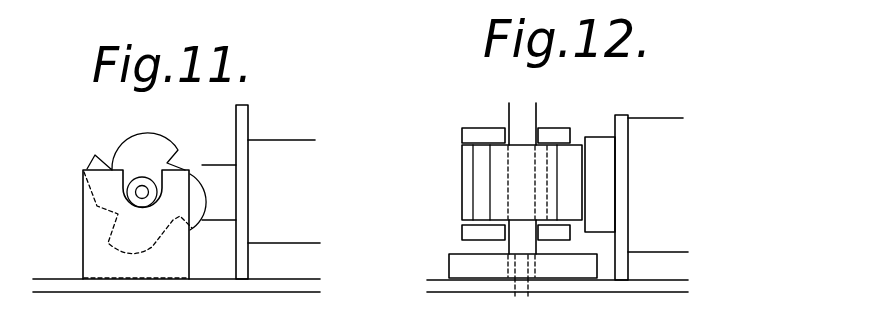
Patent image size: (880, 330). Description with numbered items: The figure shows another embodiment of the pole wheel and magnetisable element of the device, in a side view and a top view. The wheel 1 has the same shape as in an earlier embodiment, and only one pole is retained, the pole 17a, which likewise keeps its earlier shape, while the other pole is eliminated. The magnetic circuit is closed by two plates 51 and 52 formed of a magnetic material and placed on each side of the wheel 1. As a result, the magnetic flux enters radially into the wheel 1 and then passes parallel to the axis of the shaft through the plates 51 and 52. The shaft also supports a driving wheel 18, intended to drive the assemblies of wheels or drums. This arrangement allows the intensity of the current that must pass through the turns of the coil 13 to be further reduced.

In FIG. 11, the wheel 1 is at (160, 146).
In FIG. 12, the wheel 1 is at (460, 175).
In FIG. 11, the coil 13 is at (290, 158).
In FIG. 12, the coil 13 is at (654, 137).
In FIG. 11, the plate 52 is at (83, 207).
In FIG. 12, the plate 52 is at (472, 231).
In FIG. 11, the pole 17a is at (222, 197).
In FIG. 12, the plate 51 is at (478, 137).
In FIG. 12, the driving wheel 18 is at (466, 264).